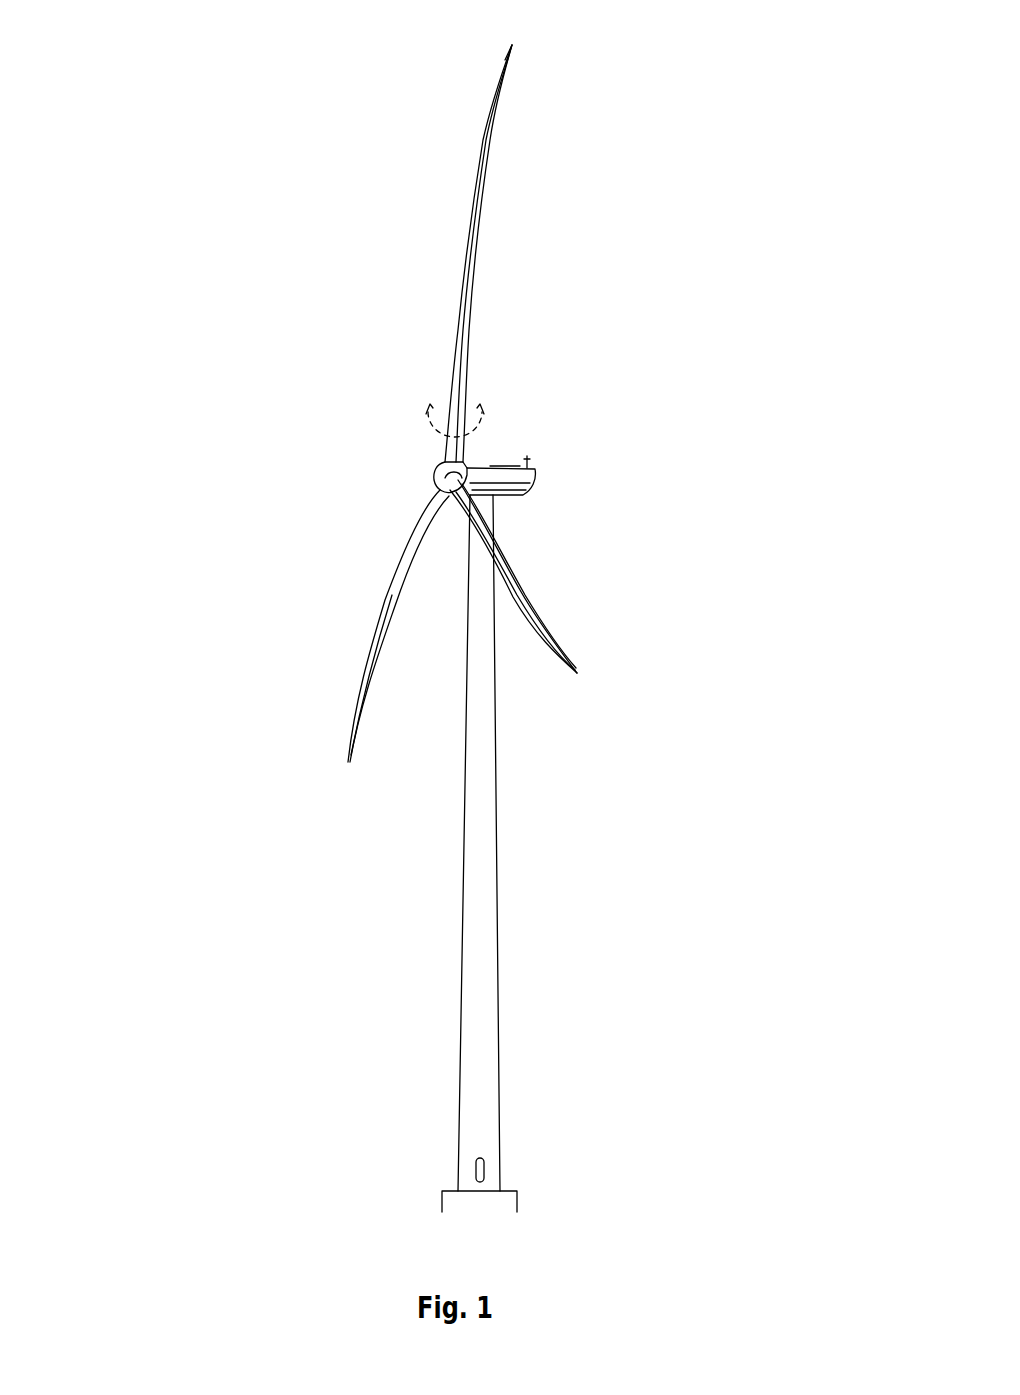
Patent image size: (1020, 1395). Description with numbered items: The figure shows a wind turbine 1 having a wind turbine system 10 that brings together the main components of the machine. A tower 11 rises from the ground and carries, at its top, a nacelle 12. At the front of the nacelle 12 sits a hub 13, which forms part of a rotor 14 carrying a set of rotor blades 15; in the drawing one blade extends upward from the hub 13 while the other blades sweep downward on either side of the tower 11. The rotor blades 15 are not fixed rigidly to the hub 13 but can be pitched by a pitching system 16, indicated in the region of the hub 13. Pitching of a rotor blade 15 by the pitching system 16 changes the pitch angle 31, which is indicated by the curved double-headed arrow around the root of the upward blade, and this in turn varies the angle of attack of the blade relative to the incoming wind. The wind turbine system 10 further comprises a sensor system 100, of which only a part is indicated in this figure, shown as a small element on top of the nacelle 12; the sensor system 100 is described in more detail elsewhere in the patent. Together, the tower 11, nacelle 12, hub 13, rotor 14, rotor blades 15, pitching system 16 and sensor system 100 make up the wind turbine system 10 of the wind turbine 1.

The wind turbine 1 is at (280, 330).
The wind turbine system 10 is at (392, 1073).
The tower 11 is at (480, 880).
The nacelle 12 is at (513, 498).
The hub 13 is at (432, 482).
The rotor 14 is at (531, 101).
The rotor blades 15 is at (480, 232).
The pitching system 16 is at (438, 465).
The pitch angle 31 is at (487, 425).
The sensor system 100 is at (528, 455).